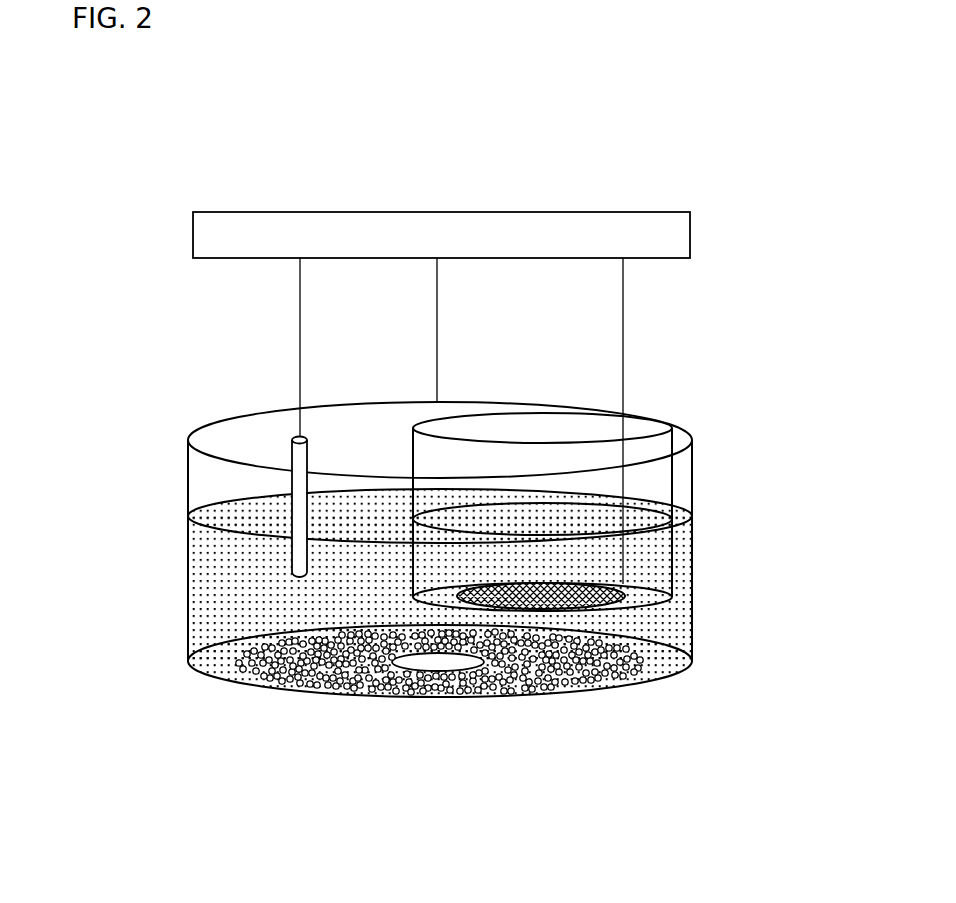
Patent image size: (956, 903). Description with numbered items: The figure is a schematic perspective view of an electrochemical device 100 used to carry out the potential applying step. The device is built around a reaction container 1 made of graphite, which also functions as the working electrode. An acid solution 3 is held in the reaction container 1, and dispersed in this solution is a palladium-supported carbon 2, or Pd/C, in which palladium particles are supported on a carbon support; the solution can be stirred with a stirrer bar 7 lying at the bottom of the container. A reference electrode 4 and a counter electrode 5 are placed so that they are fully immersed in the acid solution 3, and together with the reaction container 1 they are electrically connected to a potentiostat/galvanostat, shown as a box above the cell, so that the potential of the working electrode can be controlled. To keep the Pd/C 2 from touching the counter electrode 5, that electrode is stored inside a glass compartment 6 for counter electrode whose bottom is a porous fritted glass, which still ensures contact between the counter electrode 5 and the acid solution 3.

The electrochemical device 100 is at (655, 150).
The reaction container 1 is at (692, 648).
The palladium-supported carbon (Pd/C) 2 is at (289, 667).
The acid solution 3 is at (245, 606).
The reference electrode 4 is at (291, 481).
The counter electrode 5 is at (692, 602).
The compartment for counter electrode 6 is at (673, 467).
The stirrer bar 7 is at (420, 675).